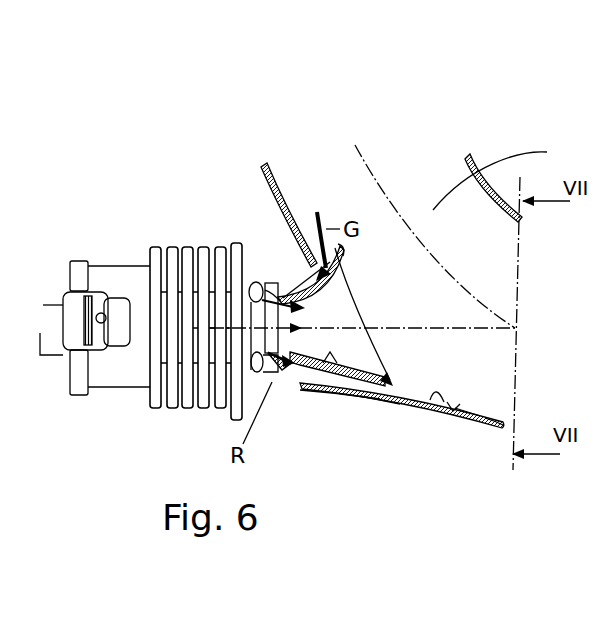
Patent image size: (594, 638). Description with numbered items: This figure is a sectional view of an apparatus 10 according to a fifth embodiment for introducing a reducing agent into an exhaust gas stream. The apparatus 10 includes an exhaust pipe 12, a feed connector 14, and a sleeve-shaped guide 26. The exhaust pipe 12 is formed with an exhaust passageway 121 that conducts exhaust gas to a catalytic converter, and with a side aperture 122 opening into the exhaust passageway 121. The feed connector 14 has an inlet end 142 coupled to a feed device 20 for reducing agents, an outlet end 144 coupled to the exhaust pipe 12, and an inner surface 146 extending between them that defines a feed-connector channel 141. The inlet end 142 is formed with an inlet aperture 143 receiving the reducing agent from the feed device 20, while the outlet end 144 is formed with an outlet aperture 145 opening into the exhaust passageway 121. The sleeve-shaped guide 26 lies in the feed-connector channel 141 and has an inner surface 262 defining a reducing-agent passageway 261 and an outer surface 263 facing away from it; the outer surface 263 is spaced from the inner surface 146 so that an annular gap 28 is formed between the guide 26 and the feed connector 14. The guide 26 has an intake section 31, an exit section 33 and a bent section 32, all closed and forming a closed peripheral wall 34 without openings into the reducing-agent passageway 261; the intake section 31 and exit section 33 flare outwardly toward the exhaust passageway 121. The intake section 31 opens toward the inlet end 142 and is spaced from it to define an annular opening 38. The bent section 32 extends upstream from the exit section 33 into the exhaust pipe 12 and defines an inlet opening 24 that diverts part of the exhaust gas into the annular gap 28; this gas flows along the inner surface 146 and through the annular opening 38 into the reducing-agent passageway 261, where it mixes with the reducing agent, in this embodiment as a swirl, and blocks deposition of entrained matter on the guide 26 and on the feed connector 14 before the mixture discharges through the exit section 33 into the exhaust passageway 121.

The apparatus 10 is at (502, 113).
The exhaust pipe 12 is at (491, 428).
The feed connector 14 is at (410, 394).
The feed device 20 is at (120, 370).
The inlet opening 24 is at (345, 267).
The sleeve-shaped guide 26 is at (367, 398).
The annular gap 28 is at (340, 367).
The intake section 31 is at (300, 278).
The bent section 32 is at (341, 249).
The exit section 33 is at (342, 287).
The closed peripheral wall 34 is at (350, 348).
The annular opening 38 is at (280, 385).
The exhaust passageway 121 is at (511, 176).
The side aperture 122 is at (305, 255).
The feed-connector channel 141 is at (373, 388).
The inlet end 142 is at (257, 282).
The inlet aperture 143 is at (238, 250).
The outlet end 144 is at (461, 400).
The outlet aperture 145 is at (455, 395).
The inner surface 146 is at (446, 412).
The reducing-agent passageway 261 is at (302, 386).
The inner surface 262 is at (315, 343).
The outer surface 263 is at (349, 383).